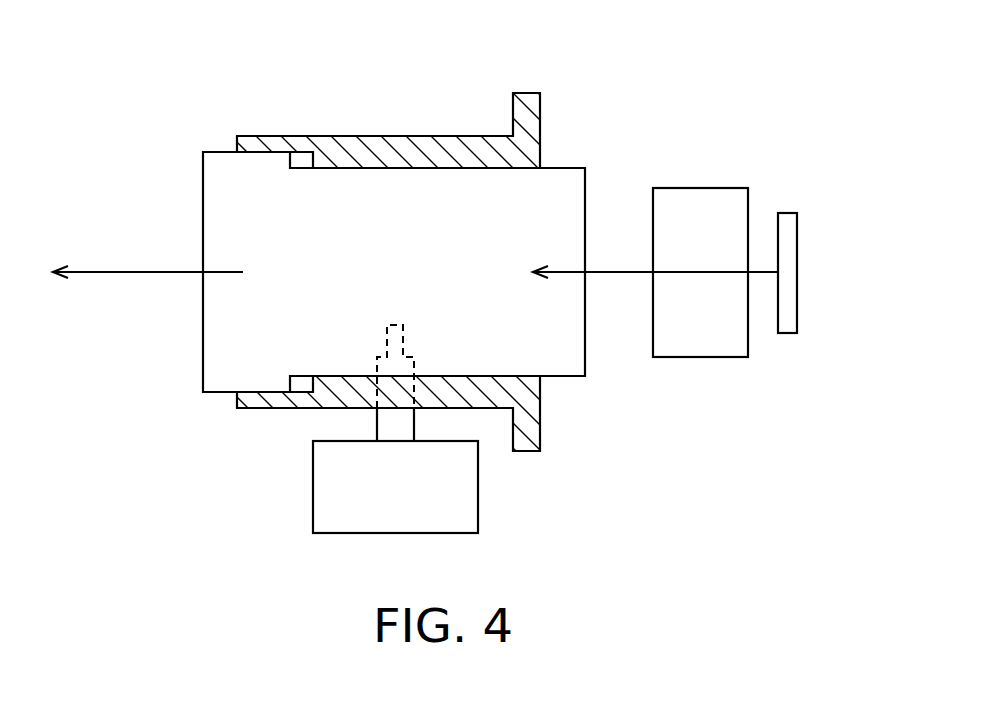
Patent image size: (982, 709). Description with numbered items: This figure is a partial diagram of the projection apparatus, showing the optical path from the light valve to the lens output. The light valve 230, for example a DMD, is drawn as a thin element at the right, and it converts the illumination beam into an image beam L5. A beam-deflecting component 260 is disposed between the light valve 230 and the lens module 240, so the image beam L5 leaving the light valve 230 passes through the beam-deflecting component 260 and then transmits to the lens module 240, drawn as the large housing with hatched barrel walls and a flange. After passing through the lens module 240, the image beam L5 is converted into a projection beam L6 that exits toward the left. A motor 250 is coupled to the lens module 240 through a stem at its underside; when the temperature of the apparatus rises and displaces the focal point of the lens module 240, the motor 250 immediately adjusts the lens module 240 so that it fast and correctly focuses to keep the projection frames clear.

The lens module 240 is at (186, 172).
The motor 250 is at (462, 496).
The beam-deflecting component 260 is at (703, 207).
The light valve 230 is at (788, 233).
The image beam L5 is at (617, 272).
The projection beam L6 is at (103, 272).